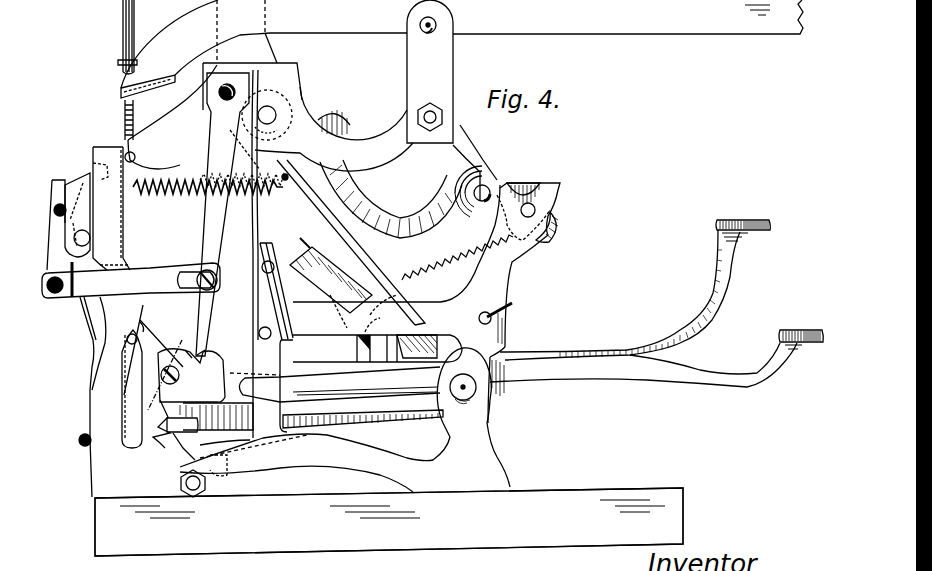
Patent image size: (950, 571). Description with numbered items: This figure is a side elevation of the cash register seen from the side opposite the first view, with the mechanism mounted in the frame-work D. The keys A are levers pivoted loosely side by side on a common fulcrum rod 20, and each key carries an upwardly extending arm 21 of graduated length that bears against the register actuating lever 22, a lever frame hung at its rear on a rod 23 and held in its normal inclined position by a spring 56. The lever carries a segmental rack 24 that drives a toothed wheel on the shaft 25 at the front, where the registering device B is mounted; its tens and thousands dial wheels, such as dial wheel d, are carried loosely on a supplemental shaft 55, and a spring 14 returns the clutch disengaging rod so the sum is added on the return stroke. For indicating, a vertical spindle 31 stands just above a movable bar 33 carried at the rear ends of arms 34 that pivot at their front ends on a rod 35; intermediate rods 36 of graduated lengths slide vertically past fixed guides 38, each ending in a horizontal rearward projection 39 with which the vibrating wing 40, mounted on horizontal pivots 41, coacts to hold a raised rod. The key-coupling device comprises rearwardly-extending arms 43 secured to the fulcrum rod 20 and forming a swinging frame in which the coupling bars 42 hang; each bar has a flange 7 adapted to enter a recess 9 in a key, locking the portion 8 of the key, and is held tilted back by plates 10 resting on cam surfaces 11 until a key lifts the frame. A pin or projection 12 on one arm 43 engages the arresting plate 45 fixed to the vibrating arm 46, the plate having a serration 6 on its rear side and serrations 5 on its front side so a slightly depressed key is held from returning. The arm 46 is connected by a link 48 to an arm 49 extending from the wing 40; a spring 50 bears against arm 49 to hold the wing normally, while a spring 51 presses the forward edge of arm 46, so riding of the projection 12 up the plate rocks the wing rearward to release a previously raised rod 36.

The vertical spindle 31 is at (122, 22).
The movable bar 33 is at (119, 95).
The arms 34 is at (489, 37).
The rod 35 is at (436, 32).
The intermediate rods 36 is at (124, 120).
The fixed guides 38 is at (136, 155).
The horizontal rearward projection 39 is at (114, 263).
The vibrating wing 40 is at (93, 165).
The horizontal pivots 41 is at (90, 237).
The coupling bars 42 is at (143, 410).
The rearwardly-extending arms 43 is at (341, 397).
The arresting plate 45 is at (187, 322).
The vibrating arm 46 is at (222, 214).
The link 48 is at (131, 280).
The arm 49 is at (52, 253).
The spring 50 is at (101, 322).
The spring 51 is at (258, 84).
The supplemental shaft 55 is at (532, 204).
The spring 56 is at (210, 177).
The rod 23 is at (268, 111).
The rack 24 is at (415, 195).
The shaft 25 is at (480, 185).
The register actuating lever 22 is at (390, 298).
The upwardly extending arm 21 is at (376, 299).
The fulcrum rod 20 is at (464, 400).
The spring 14 is at (513, 305).
The pin or projection 12 is at (191, 375).
The cam surfaces 11 is at (150, 319).
The plates 10 is at (149, 338).
The recesses 9 is at (175, 424).
The portion 8 is at (165, 375).
The flange 7 is at (173, 445).
The serration 6 is at (184, 347).
The serrations 5 is at (206, 353).
The keys A is at (656, 303).
The registering device B is at (489, 162).
The frame-work D is at (503, 264).
The dial wheel d is at (556, 219).